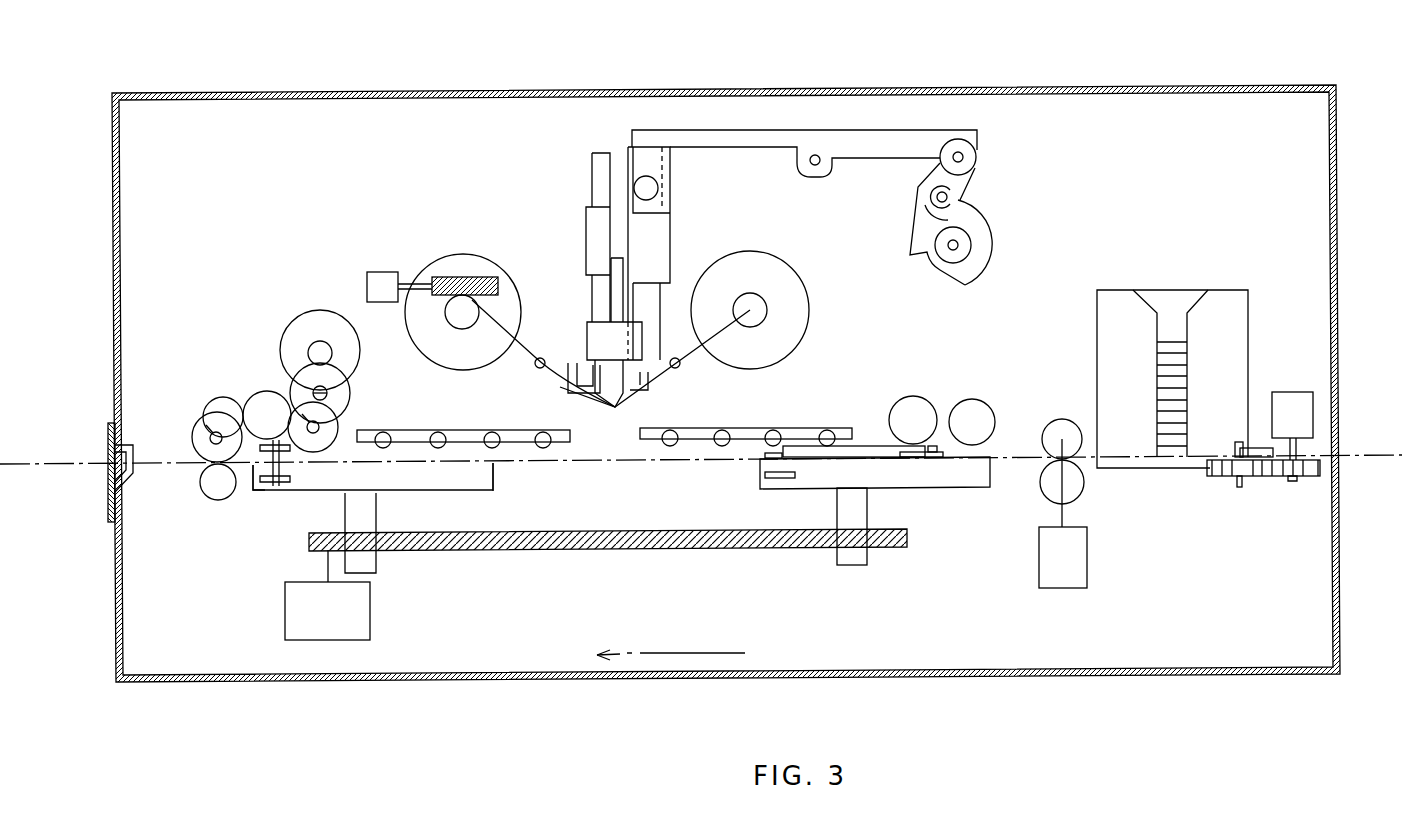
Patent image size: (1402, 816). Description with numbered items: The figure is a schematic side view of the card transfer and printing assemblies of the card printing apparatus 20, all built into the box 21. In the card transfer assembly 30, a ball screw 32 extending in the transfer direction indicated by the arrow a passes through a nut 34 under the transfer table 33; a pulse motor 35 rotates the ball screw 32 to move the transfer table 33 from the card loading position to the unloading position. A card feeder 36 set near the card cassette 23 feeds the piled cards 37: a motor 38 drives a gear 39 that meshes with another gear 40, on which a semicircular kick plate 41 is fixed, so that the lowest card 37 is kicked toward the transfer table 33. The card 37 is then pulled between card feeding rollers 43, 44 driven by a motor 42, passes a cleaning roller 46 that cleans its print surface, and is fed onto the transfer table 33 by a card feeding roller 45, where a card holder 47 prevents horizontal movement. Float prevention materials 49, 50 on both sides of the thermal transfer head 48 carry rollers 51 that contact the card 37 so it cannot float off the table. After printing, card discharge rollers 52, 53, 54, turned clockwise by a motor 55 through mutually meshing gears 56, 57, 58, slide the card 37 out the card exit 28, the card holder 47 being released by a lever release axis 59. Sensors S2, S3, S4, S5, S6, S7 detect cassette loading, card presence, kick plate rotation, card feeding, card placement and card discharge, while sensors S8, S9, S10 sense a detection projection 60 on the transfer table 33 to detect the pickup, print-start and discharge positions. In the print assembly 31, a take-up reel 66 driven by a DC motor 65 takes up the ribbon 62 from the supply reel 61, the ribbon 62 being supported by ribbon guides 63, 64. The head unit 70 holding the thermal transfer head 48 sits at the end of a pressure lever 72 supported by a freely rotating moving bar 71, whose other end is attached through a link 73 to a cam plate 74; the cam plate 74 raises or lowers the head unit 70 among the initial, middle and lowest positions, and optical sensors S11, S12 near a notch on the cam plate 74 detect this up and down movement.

The card printing apparatus 20 is at (231, 71).
The box 21 is at (867, 88).
The card cassette 23 is at (1232, 288).
The card exit 28 is at (108, 480).
The card transfer assembly 30 is at (575, 622).
The print assembly 31 is at (560, 198).
The ball screw 32 is at (483, 550).
The transfer table 33 is at (980, 488).
The nut 34 is at (867, 558).
The pulse motor 35 is at (370, 625).
The card feeder 36 is at (1323, 443).
The card 37 is at (873, 445).
The motor 38 is at (1293, 392).
The gear 39 is at (1313, 477).
The gear 40 is at (1220, 477).
The kick plate 41 is at (1262, 477).
The motor 42 is at (1087, 580).
The card feeding roller 43 is at (1065, 419).
The card feeding roller 44 is at (1084, 492).
The card feeding roller 45 is at (912, 396).
The cleaning roller 46 is at (970, 399).
The card holder 47 is at (780, 462).
The thermal transfer head 48 is at (701, 447).
The float prevention material 49 is at (768, 425).
The float prevention material 50 is at (478, 420).
The rollers 51 is at (492, 447).
The card discharge roller 52 is at (342, 423).
The card discharge roller 53 is at (198, 428).
The card discharge roller 54 is at (207, 497).
The motor 55 is at (303, 315).
The gear 56 is at (283, 351).
The gear 57 is at (253, 392).
The gear 58 is at (215, 398).
The lever release axis 59 is at (257, 490).
The detection projection 60 is at (775, 480).
The supply reel 61 is at (808, 290).
The ribbon 62 is at (692, 355).
The ribbon guide 63 is at (673, 350).
The ribbon guide 64 is at (543, 358).
The DC motor 65 is at (383, 272).
The take-up reel 66 is at (503, 267).
The head unit 70 is at (578, 301).
The moving bar 71 is at (822, 172).
The pressure lever 72 is at (776, 129).
The link 73 is at (968, 182).
The cam plate 74 is at (997, 242).
The arrow a is at (668, 650).
The sensor S2 is at (1103, 250).
The sensor S3 is at (1170, 503).
The sensor S4 is at (1260, 427).
The sensor S5 is at (1022, 427).
The sensor S6 is at (928, 482).
The sensor S7 is at (152, 428).
The sensor S8 is at (778, 517).
The sensor S9 is at (670, 515).
The sensor S10 is at (275, 515).
The optical sensor S11 is at (946, 290).
The optical sensor S12 is at (927, 285).